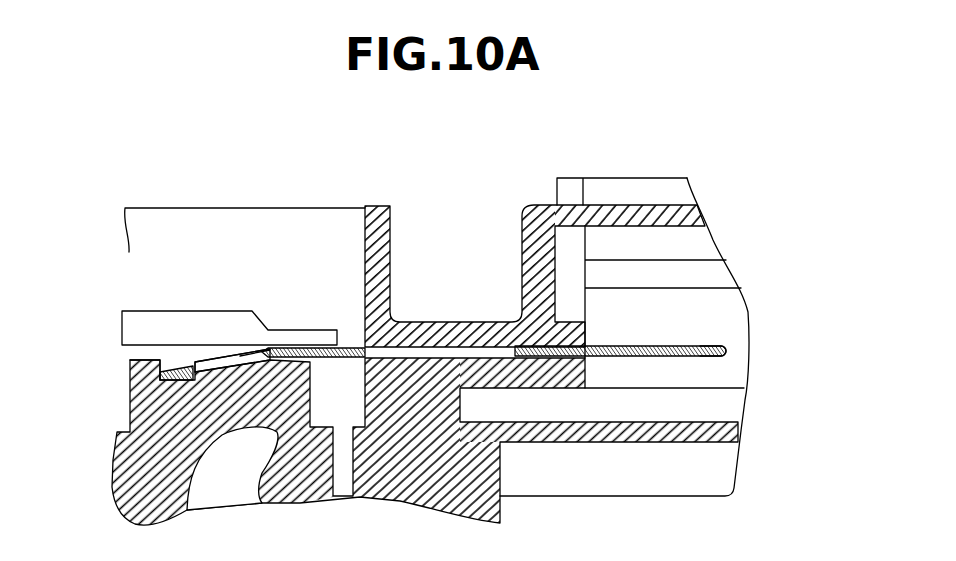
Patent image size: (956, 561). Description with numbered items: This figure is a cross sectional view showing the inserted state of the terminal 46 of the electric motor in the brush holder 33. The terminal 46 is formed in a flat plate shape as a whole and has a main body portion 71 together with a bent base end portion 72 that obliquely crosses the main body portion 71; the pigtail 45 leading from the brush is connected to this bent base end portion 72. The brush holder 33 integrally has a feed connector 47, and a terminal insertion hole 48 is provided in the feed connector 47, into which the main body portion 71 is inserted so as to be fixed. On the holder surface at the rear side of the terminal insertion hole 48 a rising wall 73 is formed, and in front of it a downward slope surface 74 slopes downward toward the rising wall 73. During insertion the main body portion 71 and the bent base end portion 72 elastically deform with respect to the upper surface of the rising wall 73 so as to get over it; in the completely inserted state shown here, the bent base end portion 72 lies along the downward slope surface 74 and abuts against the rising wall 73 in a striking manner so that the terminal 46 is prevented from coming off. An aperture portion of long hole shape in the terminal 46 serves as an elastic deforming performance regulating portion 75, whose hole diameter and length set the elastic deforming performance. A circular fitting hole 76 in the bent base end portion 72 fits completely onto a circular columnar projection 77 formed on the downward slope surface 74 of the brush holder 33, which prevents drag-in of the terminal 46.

The brush holder 33 is at (125, 470).
The pigtail 45 is at (162, 325).
The terminal 46 is at (645, 344).
The feed connector 47 is at (654, 205).
The terminal insertion hole 48 is at (403, 346).
The main body portion 71 is at (674, 347).
The bent base end portion 72 is at (170, 366).
The rising wall 73 is at (130, 366).
The downward slope surface 74 is at (163, 376).
The elastic deforming performance regulating portion 75 is at (508, 354).
The fitting hole 76 is at (240, 355).
The projection 77 is at (209, 365).